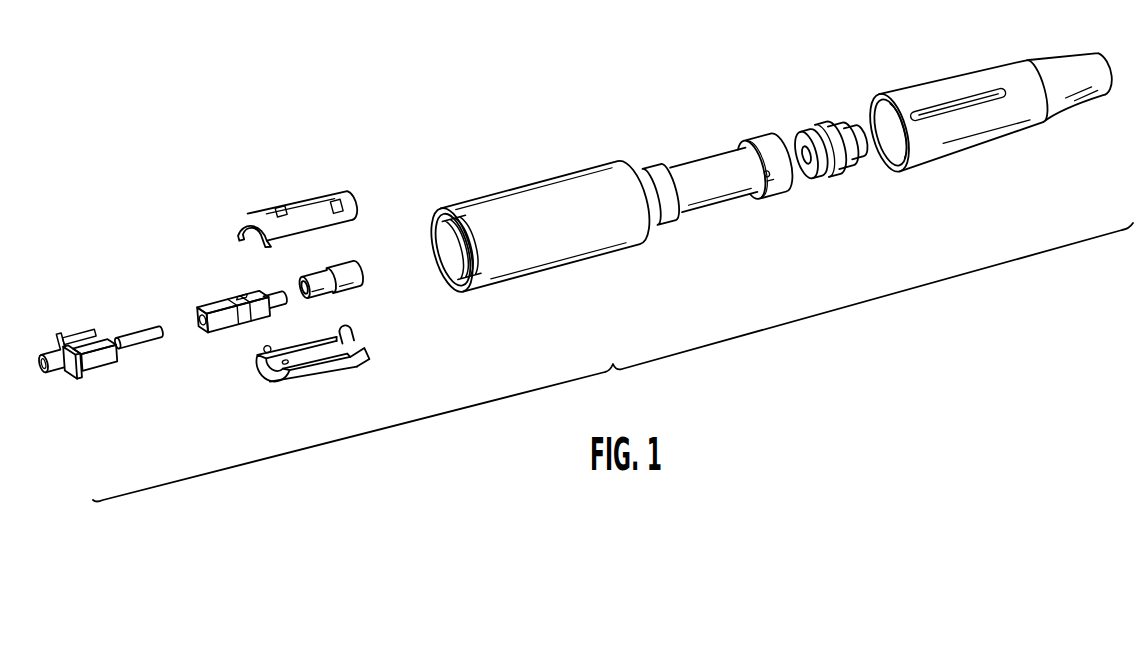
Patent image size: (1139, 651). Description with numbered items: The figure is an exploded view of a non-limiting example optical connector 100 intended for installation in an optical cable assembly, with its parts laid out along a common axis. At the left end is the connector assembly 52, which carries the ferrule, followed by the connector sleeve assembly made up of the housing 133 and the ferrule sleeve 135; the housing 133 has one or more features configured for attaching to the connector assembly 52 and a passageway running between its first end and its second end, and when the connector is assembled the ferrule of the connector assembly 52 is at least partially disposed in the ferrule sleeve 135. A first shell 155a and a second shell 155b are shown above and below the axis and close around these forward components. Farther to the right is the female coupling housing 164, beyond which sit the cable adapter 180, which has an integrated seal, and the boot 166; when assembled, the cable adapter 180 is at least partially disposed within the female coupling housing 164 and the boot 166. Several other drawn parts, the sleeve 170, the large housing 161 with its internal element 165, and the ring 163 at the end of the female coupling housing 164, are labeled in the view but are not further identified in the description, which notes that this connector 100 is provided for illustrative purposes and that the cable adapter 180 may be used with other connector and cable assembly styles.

The optical connector 100 is at (613, 362).
The housing 133 is at (82, 376).
The ferrule sleeve 135 is at (146, 328).
The connector assembly 52 is at (250, 300).
The spring sleeve 170 is at (352, 273).
The first shell 155a is at (315, 207).
The second shell 155b is at (338, 360).
The outer housing 161 is at (490, 283).
The internal threads 165 is at (440, 263).
The female coupling housing 164 is at (708, 168).
The retention ring 163 is at (766, 195).
The cable adapter 180 is at (827, 167).
The boot 166 is at (980, 83).